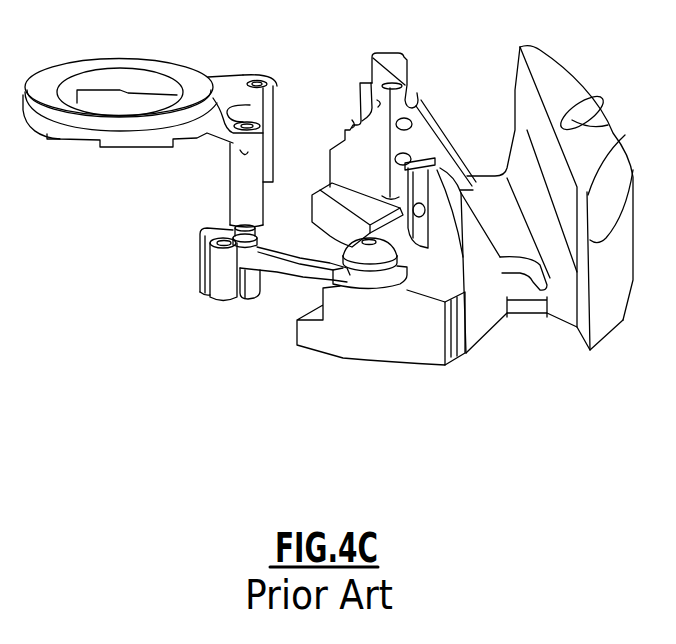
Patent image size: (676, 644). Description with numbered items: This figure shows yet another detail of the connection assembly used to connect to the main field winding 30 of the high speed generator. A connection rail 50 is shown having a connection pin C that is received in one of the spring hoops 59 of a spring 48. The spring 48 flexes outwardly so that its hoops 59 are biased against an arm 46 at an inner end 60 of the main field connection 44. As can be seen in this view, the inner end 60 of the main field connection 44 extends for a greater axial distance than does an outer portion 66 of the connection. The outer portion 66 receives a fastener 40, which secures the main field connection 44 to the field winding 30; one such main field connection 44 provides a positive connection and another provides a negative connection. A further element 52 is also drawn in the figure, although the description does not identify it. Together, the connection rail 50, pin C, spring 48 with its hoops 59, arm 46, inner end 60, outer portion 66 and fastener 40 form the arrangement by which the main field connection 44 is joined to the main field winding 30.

The main field winding 30 is at (240, 115).
The connection rail 50 is at (247, 152).
The connection pin C is at (242, 223).
The fastener 40 is at (323, 190).
The spring hoop 59 is at (260, 236).
The spring 48 is at (200, 257).
The cylinder 52 is at (228, 267).
The inner end 60 is at (250, 282).
The main field connection 44 is at (280, 277).
The arm 46 is at (298, 270).
The outer portion 66 is at (375, 288).